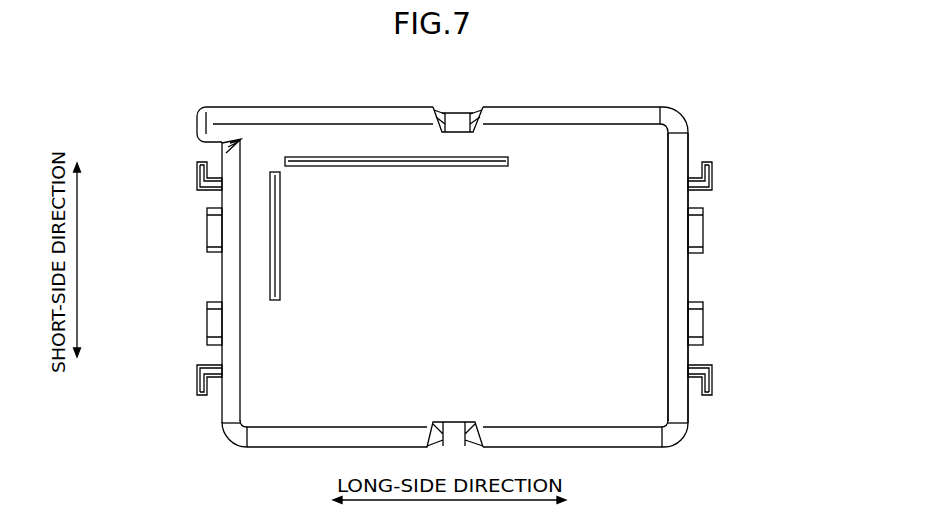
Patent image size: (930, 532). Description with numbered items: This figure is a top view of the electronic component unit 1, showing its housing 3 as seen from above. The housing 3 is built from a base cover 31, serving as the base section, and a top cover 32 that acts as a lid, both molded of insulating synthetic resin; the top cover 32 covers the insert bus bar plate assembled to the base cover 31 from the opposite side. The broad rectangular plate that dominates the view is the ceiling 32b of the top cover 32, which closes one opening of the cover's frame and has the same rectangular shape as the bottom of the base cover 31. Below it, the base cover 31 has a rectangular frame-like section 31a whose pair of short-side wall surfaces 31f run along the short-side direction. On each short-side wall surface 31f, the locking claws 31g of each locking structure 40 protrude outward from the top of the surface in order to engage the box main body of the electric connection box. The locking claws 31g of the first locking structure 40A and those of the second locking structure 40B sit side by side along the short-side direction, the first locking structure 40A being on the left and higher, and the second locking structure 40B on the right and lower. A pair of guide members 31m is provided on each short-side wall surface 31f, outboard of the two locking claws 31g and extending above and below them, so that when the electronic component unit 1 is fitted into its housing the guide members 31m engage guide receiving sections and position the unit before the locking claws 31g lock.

The electronic component unit 1 is at (165, 84).
The housing 3 is at (793, 95).
The base cover 31 is at (712, 215).
The rectangular frame-like section 31a is at (455, 278).
The short-side wall surface 31f is at (222, 272).
The locking claw 31g is at (457, 266).
The guide member 31m is at (198, 178).
The top cover 32 is at (695, 148).
The ceiling 32b is at (560, 160).
The locking structure 40 is at (457, 266).
The first locking structure 40A is at (735, 325).
The second locking structure 40B is at (735, 243).